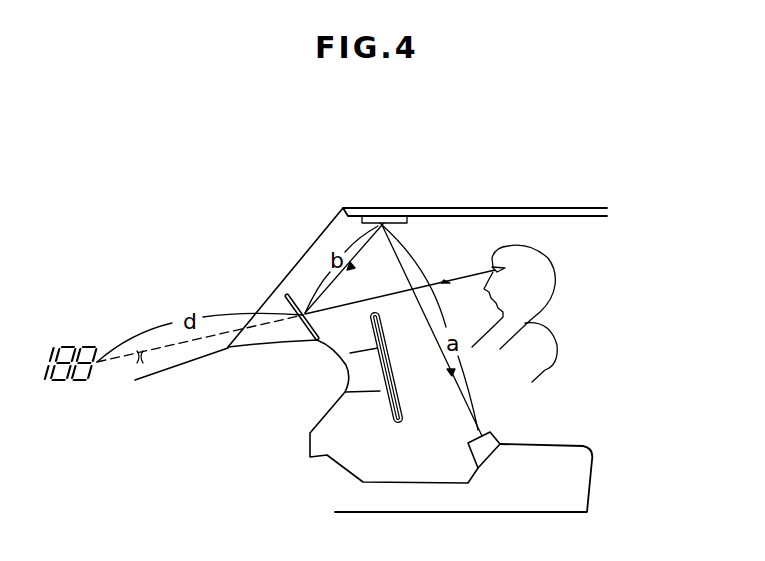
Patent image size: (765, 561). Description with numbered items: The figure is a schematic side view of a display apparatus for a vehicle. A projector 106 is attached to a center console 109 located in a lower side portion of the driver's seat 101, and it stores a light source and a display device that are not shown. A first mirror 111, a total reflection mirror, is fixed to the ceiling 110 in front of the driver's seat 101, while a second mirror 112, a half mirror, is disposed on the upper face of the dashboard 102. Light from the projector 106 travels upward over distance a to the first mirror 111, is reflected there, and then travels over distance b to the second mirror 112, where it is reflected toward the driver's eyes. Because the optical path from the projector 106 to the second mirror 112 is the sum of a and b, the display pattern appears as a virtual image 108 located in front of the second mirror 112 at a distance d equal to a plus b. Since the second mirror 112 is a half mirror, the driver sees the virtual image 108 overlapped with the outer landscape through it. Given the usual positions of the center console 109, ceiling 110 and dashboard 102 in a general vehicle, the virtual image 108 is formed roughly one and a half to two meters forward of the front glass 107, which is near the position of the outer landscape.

The driver's seat 101 is at (540, 365).
The dashboard 102 is at (265, 348).
The projector 106 is at (492, 433).
The front glass 107 is at (311, 242).
The virtual image 108 is at (79, 386).
The center console 109 is at (585, 472).
The ceiling 110 is at (500, 213).
The first mirror 111 is at (386, 216).
The second mirror 112 is at (282, 302).